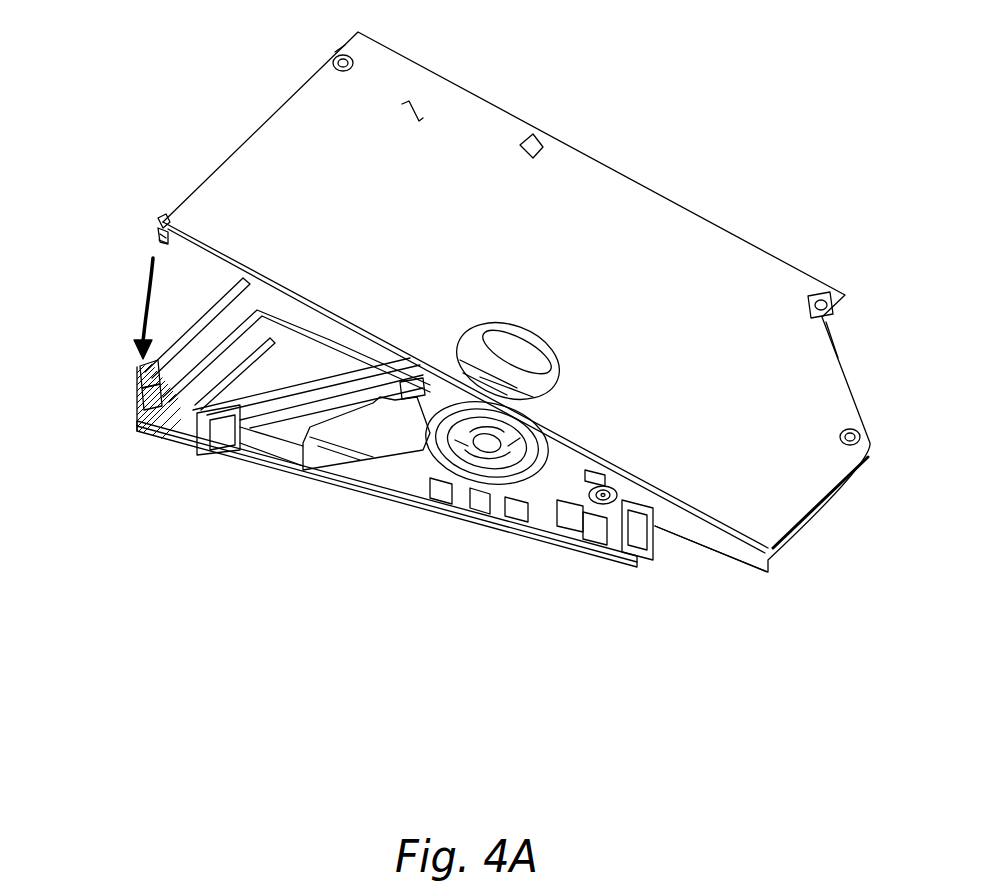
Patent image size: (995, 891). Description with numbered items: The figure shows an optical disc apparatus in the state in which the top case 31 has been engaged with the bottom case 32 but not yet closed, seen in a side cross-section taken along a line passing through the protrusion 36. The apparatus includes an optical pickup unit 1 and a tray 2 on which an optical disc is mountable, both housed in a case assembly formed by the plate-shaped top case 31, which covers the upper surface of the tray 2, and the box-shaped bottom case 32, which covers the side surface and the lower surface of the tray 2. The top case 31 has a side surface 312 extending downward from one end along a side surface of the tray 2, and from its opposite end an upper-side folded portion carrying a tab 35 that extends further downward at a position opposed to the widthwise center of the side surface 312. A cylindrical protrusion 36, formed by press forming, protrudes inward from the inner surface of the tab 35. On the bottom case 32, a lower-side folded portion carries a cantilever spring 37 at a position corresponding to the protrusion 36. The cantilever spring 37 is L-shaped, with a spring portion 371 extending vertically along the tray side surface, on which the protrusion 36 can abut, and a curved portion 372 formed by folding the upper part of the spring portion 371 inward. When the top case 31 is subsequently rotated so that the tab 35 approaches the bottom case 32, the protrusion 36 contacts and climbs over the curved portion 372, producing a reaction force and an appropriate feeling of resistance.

The optical pickup unit 1 is at (548, 498).
The tray 2 is at (207, 393).
The top case 31 is at (535, 252).
The side surface 312 is at (810, 513).
The bottom case 32 is at (421, 512).
The tab 35 is at (161, 232).
The protrusion 36 is at (163, 231).
The cantilever spring 37 is at (62, 305).
The spring portion 371 is at (140, 386).
The curved portion 372 is at (141, 377).